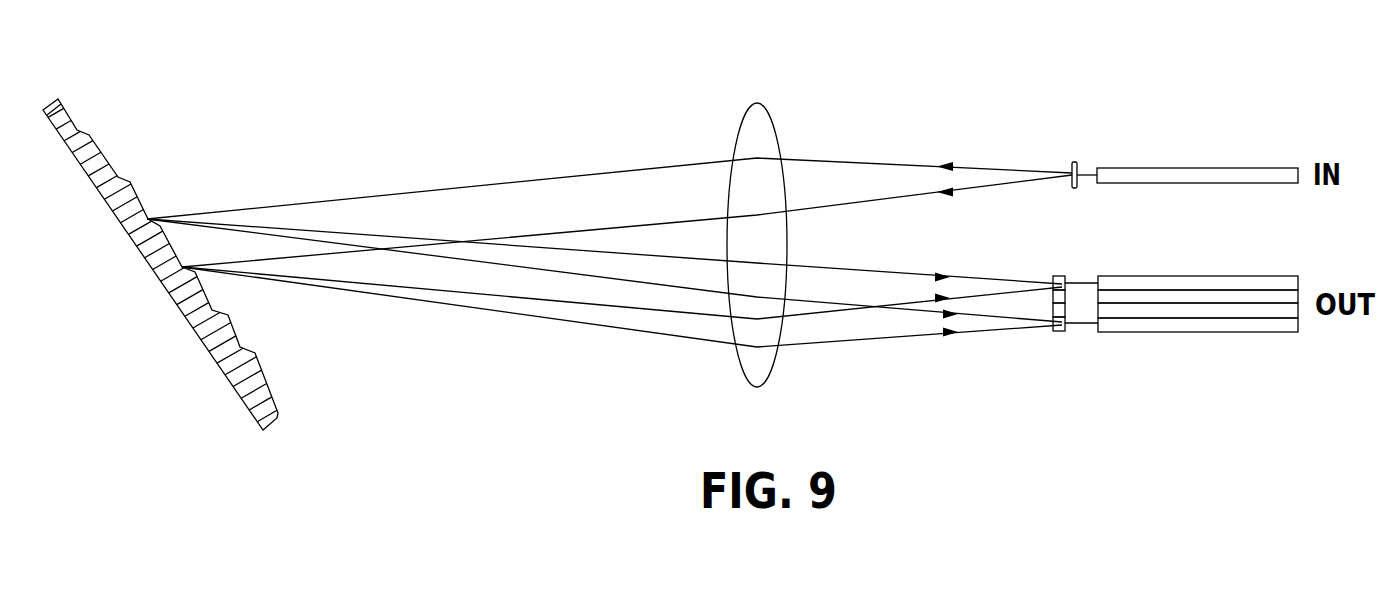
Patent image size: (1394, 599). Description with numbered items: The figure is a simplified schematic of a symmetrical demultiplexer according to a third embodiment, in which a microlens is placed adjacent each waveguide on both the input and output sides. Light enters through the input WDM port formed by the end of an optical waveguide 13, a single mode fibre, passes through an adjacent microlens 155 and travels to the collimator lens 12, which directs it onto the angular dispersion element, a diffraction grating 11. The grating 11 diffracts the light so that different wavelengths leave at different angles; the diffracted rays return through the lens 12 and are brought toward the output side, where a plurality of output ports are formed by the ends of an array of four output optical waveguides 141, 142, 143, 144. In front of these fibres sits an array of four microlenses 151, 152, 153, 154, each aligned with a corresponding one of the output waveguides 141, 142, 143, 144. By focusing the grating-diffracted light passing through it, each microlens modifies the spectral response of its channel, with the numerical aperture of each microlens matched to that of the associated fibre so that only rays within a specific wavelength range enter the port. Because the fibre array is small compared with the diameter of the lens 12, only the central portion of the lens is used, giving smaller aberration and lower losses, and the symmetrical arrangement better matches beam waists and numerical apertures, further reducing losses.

The diffraction grating 11 is at (88, 135).
The collimator lens 12 is at (757, 103).
The optical waveguide 13 is at (1175, 168).
The output optical waveguide 141 is at (1173, 276).
The output optical waveguide 142 is at (1228, 295).
The output optical waveguide 143 is at (1128, 310).
The output optical waveguide 144 is at (1242, 332).
The microlens 151 is at (1062, 331).
The microlens 152 is at (1059, 296).
The microlens 153 is at (1059, 310).
The microlens 154 is at (1059, 324).
The microlens 155 is at (1072, 168).